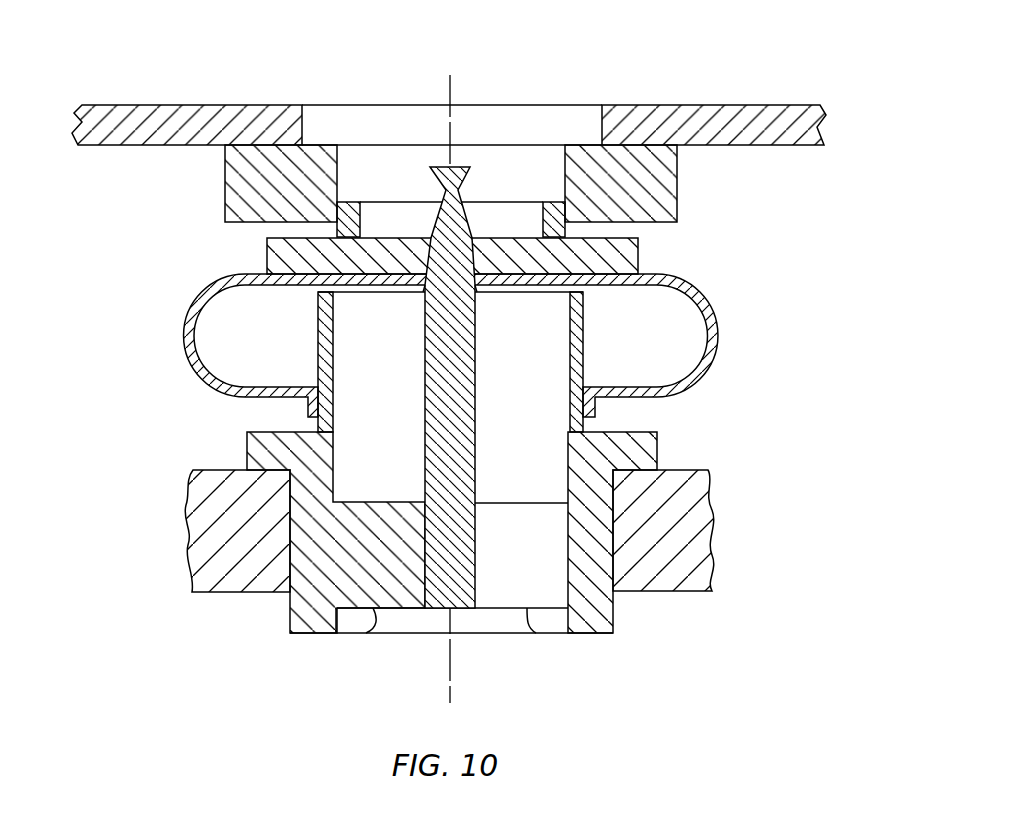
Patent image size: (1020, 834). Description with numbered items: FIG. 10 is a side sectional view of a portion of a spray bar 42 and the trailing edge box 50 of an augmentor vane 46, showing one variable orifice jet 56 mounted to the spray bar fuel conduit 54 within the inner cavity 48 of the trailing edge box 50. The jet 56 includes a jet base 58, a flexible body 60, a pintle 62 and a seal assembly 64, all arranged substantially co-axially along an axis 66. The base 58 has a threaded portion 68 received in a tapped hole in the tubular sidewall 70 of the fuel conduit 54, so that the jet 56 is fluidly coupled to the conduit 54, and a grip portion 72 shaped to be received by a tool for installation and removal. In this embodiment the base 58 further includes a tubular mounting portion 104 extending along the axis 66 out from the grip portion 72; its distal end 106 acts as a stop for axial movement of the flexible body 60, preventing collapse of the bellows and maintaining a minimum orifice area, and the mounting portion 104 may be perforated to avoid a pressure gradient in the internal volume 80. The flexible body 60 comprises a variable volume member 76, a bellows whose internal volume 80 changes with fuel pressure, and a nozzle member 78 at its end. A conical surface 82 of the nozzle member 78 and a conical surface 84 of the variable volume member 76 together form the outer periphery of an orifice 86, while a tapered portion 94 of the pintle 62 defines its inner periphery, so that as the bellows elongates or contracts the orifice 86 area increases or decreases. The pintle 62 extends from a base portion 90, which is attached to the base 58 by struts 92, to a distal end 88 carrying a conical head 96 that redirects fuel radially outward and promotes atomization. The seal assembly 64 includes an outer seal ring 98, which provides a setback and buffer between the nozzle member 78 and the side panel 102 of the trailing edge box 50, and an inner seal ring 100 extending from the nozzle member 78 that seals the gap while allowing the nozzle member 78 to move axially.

The spray bar 42 is at (416, 395).
The augmentor vane 46 is at (446, 146).
The chamber 48 is at (144, 433).
The trailing edge box 50 is at (446, 135).
The spray bar fuel conduit 54 is at (193, 596).
The variable orifice jet 56 is at (458, 341).
The jet base 58 is at (471, 560).
The flexible body 60 is at (444, 332).
The pintle 62 is at (465, 341).
The seal assembly 64 is at (212, 223).
The axis 66 is at (453, 688).
The threaded portion 68 is at (603, 605).
The tubular sidewall 70 is at (700, 570).
The grip portion 72 is at (647, 452).
The variable volume member 76 is at (185, 352).
The nozzle member 78 is at (273, 258).
The internal volume 80 is at (254, 348).
The conical surface 82 is at (425, 290).
The conical surface 84 is at (476, 292).
The orifice 86 is at (468, 240).
The distal end 88 is at (440, 167).
The base portion 90 is at (477, 472).
The struts 92 is at (372, 630).
The tapered portion 94 is at (440, 223).
The conical head 96 is at (432, 180).
The outer seal ring 98 is at (678, 183).
The inner seal ring 100 is at (565, 228).
The side panel 102 is at (96, 135).
The tubular mounting portion 104 is at (578, 342).
The distal end 106 is at (582, 288).